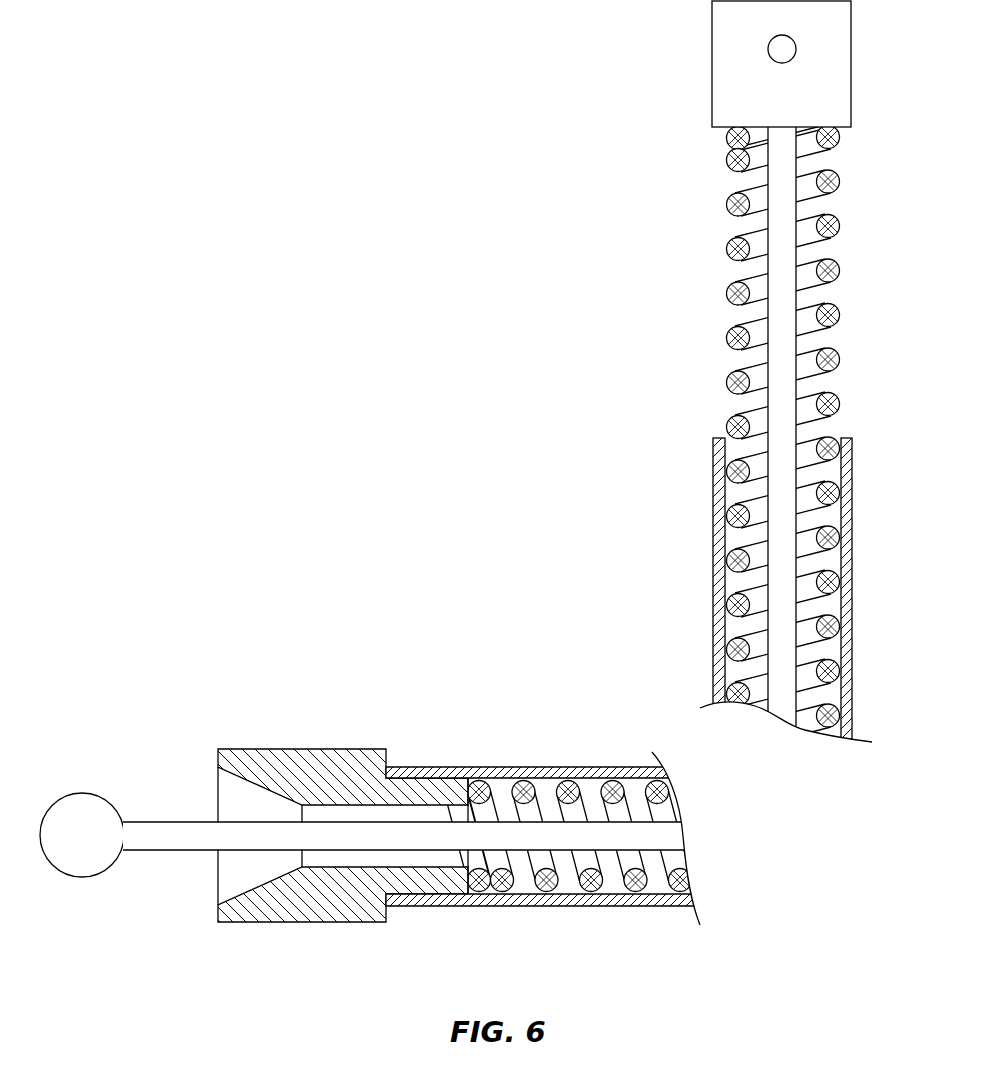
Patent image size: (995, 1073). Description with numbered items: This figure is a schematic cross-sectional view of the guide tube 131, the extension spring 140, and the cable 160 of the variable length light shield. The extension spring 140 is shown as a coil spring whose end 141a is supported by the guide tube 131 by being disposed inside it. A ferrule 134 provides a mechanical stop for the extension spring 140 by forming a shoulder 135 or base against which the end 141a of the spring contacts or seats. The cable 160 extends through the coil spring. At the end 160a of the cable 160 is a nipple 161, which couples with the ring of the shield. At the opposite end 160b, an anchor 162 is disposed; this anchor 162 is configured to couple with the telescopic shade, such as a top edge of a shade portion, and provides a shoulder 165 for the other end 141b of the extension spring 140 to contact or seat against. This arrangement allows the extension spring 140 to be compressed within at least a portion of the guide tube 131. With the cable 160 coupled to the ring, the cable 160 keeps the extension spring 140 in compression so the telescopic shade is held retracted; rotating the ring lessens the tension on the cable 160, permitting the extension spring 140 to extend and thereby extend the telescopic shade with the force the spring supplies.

The guide tube 131 is at (713, 525).
The ferrule 134 is at (307, 749).
The shoulder 135 is at (470, 893).
The extension spring 140 is at (728, 293).
The end of the extension spring 141a is at (493, 738).
The end of the extension spring 141b is at (702, 140).
The cable 160 is at (162, 852).
The end of the cable 160a is at (372, 836).
The end of the cable 160b is at (743, 373).
The nipple 161 is at (82, 877).
The anchor 162 is at (712, 28).
The shoulder 165 is at (848, 130).